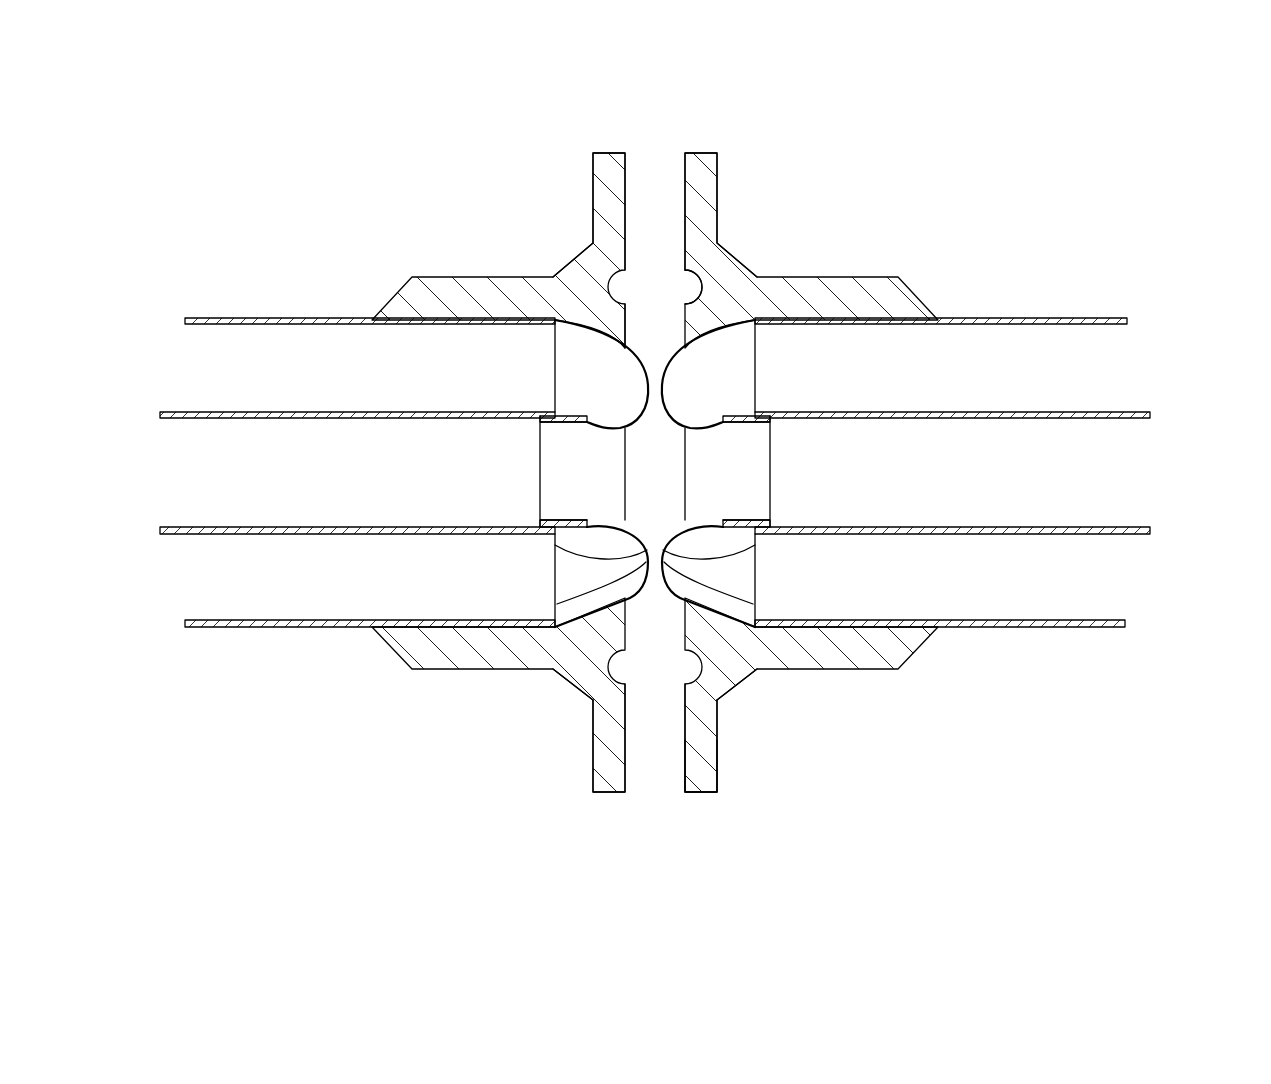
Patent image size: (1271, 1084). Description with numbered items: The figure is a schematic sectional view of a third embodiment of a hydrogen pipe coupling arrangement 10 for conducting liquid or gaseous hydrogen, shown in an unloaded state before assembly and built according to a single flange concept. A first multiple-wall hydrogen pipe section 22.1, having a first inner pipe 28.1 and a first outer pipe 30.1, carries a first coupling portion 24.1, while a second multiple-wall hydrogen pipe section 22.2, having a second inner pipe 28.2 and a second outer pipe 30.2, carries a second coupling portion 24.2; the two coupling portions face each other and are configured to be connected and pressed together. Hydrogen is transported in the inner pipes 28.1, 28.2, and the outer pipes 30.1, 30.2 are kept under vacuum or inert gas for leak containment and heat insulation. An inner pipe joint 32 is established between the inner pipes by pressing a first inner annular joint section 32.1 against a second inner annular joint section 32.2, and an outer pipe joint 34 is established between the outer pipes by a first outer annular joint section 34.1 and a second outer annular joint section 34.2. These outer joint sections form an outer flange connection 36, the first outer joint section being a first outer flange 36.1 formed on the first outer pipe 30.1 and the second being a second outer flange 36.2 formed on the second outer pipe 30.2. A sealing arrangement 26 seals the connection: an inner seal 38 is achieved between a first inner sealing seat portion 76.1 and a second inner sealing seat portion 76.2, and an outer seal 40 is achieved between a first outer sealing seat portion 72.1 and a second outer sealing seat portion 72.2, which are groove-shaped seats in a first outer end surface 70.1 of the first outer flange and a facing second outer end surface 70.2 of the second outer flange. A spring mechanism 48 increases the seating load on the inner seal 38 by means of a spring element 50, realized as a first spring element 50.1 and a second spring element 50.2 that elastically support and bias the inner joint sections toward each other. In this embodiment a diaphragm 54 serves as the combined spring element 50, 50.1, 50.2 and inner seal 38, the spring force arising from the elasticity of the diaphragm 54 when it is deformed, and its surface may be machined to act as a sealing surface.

The hydrogen pipe coupling arrangement 10 is at (212, 150).
The first multiple-wall hydrogen pipe section 22.1 is at (205, 655).
The second multiple-wall hydrogen pipe section 22.2 is at (1082, 664).
The first coupling portion 24.1 is at (612, 126).
The second coupling portion 24.2 is at (652, 810).
The sealing arrangement 26 is at (840, 185).
The first inner pipe 28.1 is at (170, 535).
The second inner pipe 28.2 is at (1125, 412).
The first outer pipe 30.1 is at (185, 625).
The second outer pipe 30.2 is at (1105, 318).
The inner pipe joint 32 is at (620, 375).
The first inner annular joint section 32.1 is at (583, 418).
The second inner annular joint section 32.2 is at (723, 420).
The outer pipe joint 34 is at (575, 150).
The first outer annular joint section 34.1 is at (540, 250).
The second outer annular joint section 34.2 is at (793, 774).
The outer flange connection 36 is at (725, 195).
The first outer flange 36.1 is at (593, 186).
The second outer flange 36.2 is at (703, 728).
The inner seal 38 is at (612, 526).
The outer seal 40 is at (725, 250).
The spring mechanism 48 is at (685, 570).
The spring element 50 is at (640, 576).
The first spring element 50.1 is at (640, 560).
The second spring element 50.2 is at (668, 535).
The diaphragm 54 is at (557, 548).
The first outer end surface 70.1 is at (628, 783).
The second outer end surface 70.2 is at (685, 754).
The first outer sealing seat portion 72.1 is at (590, 676).
The second outer sealing seat portion 72.2 is at (728, 678).
The first inner sealing seat portion 76.1 is at (585, 420).
The second inner sealing seat portion 76.2 is at (727, 420).